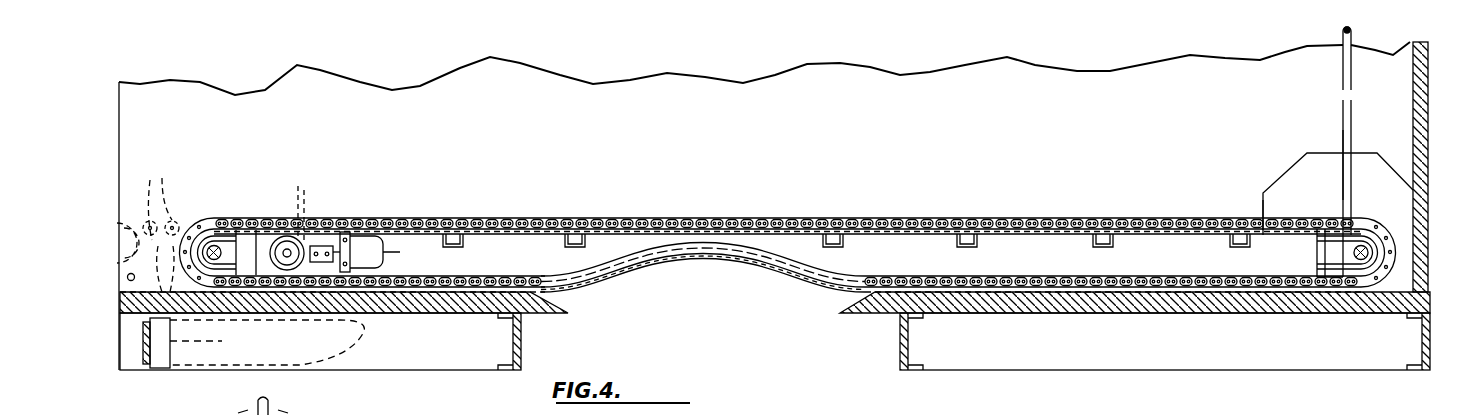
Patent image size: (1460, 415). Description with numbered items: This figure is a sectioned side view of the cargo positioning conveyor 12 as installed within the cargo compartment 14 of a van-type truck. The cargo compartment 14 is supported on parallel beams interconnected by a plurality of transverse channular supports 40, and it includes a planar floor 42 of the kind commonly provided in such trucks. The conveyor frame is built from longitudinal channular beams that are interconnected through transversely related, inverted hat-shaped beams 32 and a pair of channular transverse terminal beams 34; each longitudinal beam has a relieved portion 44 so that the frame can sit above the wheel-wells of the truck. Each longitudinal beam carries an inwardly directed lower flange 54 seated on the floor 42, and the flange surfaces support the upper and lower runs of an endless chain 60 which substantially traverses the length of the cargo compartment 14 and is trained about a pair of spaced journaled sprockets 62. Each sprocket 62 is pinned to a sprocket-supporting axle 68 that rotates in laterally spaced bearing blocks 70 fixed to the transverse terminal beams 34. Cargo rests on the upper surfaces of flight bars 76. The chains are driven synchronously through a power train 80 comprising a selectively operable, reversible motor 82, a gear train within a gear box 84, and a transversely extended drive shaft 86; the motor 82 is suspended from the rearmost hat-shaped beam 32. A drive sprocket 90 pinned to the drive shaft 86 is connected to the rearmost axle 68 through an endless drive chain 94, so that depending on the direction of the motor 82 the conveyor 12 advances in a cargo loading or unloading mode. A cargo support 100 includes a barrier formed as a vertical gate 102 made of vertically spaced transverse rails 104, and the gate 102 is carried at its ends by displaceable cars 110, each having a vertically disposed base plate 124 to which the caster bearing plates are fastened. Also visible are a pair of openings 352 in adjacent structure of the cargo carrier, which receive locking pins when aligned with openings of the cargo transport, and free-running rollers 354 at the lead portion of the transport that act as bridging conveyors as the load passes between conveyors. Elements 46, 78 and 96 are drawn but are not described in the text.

The cargo positioning conveyor 12 is at (787, 251).
The cargo compartment 14 is at (853, 86).
The inverted hat-shaped beams 32 is at (565, 240).
The transverse terminal beams 34 is at (246, 265).
The transverse channular supports 40 is at (515, 343).
The planar floor 42 is at (1173, 277).
The relieved portion 44 is at (714, 262).
The upper chain run 46 is at (786, 218).
The inwardly directed lower flange 54 is at (1218, 282).
The endless chain 60 is at (1120, 284).
The journaled sprockets 62 is at (190, 222).
The sprocket-supporting axle 68 is at (232, 236).
The bearing blocks 70 is at (208, 246).
The flight bars 76 is at (550, 216).
The chain links 78 is at (400, 212).
The power train 80 is at (364, 240).
The reversible motor 82 is at (385, 252).
The gear box 84 is at (344, 246).
The drive shaft 86 is at (302, 228).
The drive sprocket 90 is at (272, 242).
The endless drive chain 94 is at (292, 238).
The hidden housing outline 96 is at (175, 280).
The cargo support 100 is at (1336, 110).
The vertical gate 102 is at (1343, 133).
The transverse rails 104 is at (1345, 31).
The displaceable cars 110 is at (1281, 162).
The base plate 124 is at (1330, 194).
The openings 352 is at (131, 282).
The free-running rollers 354 is at (148, 223).